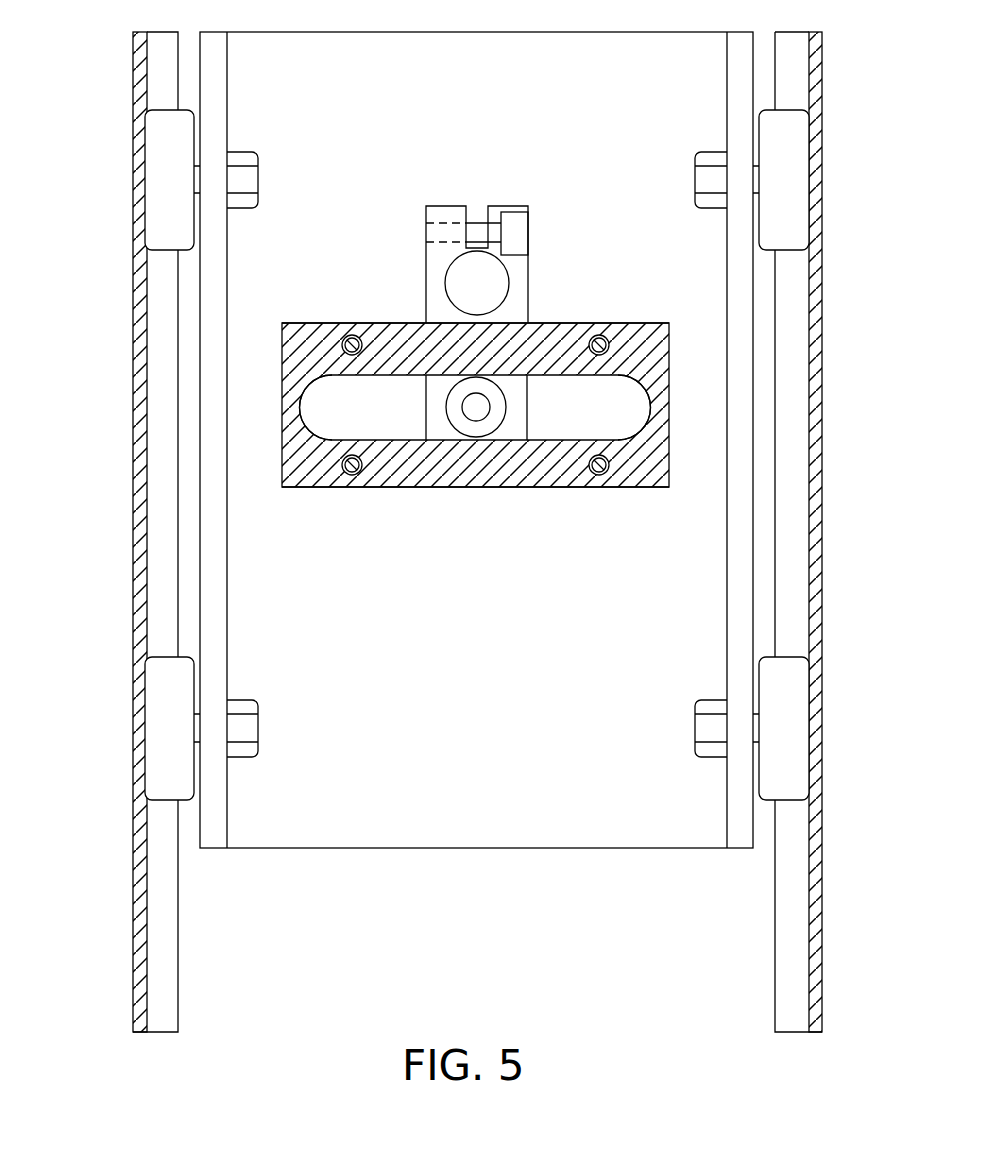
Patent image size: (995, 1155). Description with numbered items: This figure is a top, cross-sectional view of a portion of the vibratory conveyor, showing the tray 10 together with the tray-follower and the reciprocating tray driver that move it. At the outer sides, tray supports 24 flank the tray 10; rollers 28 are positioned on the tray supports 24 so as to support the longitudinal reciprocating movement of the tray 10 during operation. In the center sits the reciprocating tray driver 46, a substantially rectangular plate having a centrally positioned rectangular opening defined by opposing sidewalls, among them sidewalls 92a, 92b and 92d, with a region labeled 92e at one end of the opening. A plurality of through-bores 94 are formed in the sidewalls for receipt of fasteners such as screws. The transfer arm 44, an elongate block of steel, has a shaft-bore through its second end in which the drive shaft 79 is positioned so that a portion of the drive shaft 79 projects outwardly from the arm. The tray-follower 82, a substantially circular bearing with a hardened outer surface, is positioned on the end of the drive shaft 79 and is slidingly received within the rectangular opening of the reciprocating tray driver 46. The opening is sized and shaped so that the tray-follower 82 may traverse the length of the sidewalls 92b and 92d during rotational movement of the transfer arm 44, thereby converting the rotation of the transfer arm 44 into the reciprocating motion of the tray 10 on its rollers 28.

The tray 10 is at (132, 337).
The tray supports 24 is at (210, 562).
The rollers 28 is at (795, 187).
The transfer arm 44 is at (531, 276).
The reciprocating tray driver 46 is at (382, 322).
The drive shaft 79 is at (523, 235).
The tray-follower 82 is at (372, 382).
The sidewall 92a is at (657, 415).
The sidewall 92b is at (443, 487).
The sidewall 92d is at (622, 323).
The slot end portion 92e is at (296, 431).
The through-bores 94 is at (352, 335).